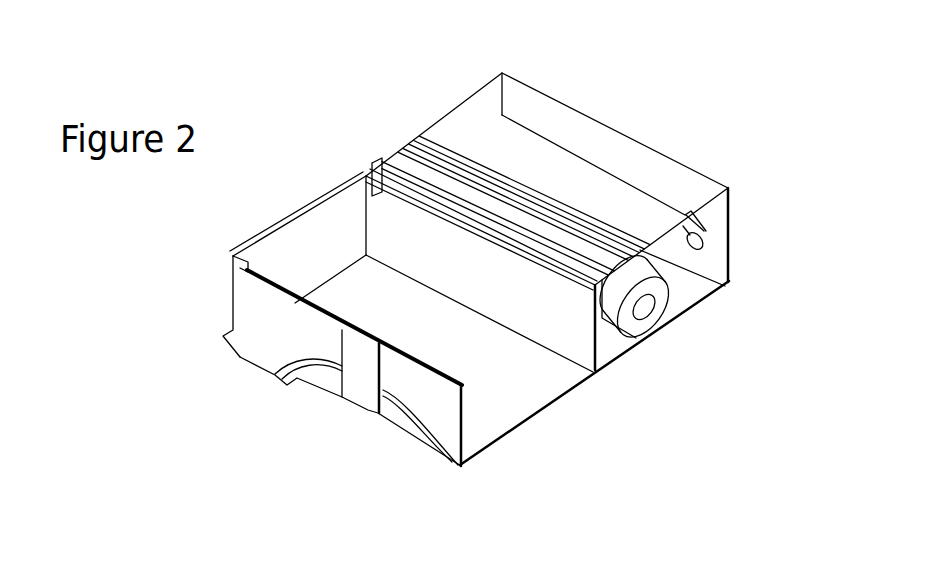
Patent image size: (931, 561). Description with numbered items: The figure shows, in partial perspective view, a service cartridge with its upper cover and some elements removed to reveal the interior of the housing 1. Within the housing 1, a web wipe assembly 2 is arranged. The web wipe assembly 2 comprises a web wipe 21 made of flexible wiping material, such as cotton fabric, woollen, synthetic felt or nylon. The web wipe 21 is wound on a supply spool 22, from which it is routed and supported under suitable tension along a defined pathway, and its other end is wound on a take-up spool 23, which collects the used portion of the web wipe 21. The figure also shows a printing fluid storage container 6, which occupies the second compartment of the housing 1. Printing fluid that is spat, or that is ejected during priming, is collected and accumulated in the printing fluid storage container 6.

The housing 1 is at (278, 332).
The web wipe assembly 2 is at (559, 168).
The web wipe 21 is at (475, 143).
The supply spool 22 is at (644, 323).
The take-up spool 23 is at (698, 240).
The printing fluid storage container 6 is at (450, 326).